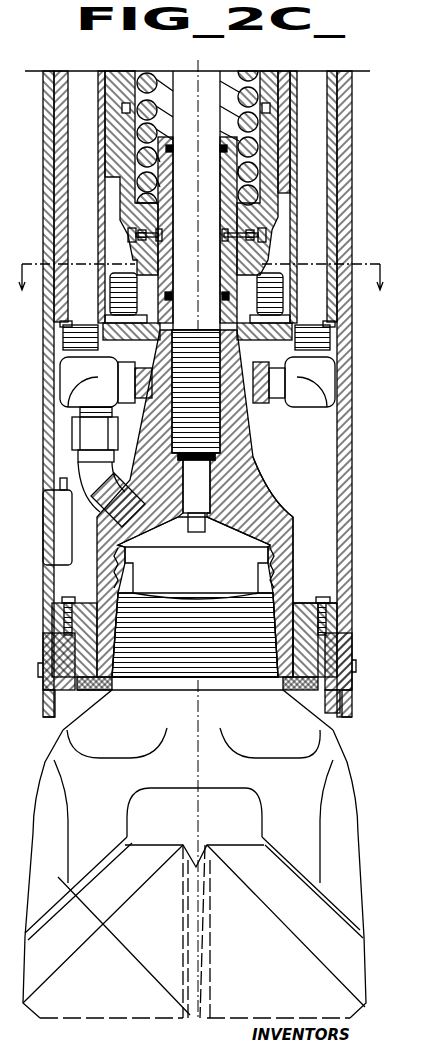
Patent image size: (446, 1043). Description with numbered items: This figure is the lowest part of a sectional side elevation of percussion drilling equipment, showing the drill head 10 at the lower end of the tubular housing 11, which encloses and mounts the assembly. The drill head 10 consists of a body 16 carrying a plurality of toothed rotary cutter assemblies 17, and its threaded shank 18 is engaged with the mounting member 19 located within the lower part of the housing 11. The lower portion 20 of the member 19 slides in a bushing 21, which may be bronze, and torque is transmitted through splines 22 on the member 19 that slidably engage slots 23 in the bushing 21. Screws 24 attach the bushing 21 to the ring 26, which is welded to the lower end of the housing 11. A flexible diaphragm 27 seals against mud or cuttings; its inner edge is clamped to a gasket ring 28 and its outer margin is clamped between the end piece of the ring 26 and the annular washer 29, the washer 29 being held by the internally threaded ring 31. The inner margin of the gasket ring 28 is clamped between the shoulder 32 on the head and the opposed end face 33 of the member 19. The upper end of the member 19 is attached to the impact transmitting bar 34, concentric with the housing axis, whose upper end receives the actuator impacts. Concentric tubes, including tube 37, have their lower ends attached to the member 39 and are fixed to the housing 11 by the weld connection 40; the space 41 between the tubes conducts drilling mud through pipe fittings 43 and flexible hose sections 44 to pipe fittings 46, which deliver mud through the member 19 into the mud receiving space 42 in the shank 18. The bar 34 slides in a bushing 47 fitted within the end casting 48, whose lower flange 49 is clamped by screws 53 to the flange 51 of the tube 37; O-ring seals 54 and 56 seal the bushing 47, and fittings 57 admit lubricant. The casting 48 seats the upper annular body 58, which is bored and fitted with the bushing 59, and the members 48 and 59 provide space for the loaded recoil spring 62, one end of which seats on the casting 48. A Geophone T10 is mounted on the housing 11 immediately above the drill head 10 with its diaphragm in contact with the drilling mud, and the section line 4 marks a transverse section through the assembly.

The drill head 10 is at (338, 812).
The tubular housing 11 is at (346, 436).
The body 16 is at (325, 746).
The toothed rotary cutter assemblies 17 is at (80, 1006).
The threaded shank 18 is at (140, 580).
The mounting member 19 is at (246, 496).
The lower portion 20 is at (306, 597).
The bushing 21 is at (77, 652).
The splines 22 is at (93, 598).
The slots 23 is at (315, 585).
The screws 24 is at (328, 590).
The ring 26 is at (334, 626).
The diaphragm 27 is at (62, 690).
The gasket ring 28 is at (296, 690).
The annular washer 29 is at (335, 702).
The ring 31 is at (345, 676).
The shoulder 32 is at (100, 690).
The end face 33 is at (105, 676).
The impact transmitting bar 34 is at (207, 76).
The tube 37 is at (296, 128).
The member 39 is at (52, 334).
The weld connection 40 is at (339, 350).
The space 41 is at (315, 98).
The mud receiving space 42 is at (230, 570).
The pipe fittings 43 is at (323, 380).
The flexible hose sections 44 is at (218, 402).
The pipe fittings 46 is at (82, 370).
The bushing 47 is at (230, 220).
The end casting 48 is at (266, 193).
The lower flange 49 is at (284, 290).
The flange 51 is at (245, 326).
The screws 53 is at (270, 306).
The O-ring seal 54 is at (174, 148).
The O-ring seal 56 is at (173, 296).
The fittings 57 is at (276, 229).
The upper annular body 58 is at (284, 76).
The bushing 59 is at (262, 76).
The recoil spring 62 is at (147, 75).
The section line 4- 4 is at (199, 267).
The Geophone T10 is at (48, 530).